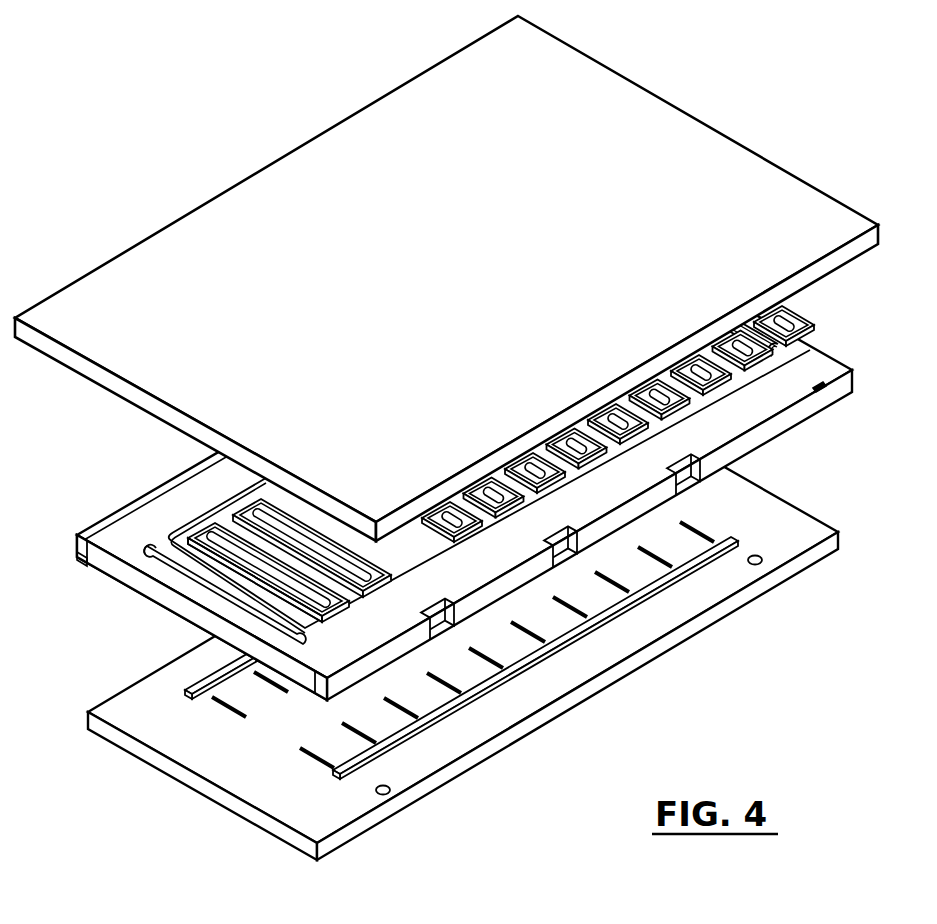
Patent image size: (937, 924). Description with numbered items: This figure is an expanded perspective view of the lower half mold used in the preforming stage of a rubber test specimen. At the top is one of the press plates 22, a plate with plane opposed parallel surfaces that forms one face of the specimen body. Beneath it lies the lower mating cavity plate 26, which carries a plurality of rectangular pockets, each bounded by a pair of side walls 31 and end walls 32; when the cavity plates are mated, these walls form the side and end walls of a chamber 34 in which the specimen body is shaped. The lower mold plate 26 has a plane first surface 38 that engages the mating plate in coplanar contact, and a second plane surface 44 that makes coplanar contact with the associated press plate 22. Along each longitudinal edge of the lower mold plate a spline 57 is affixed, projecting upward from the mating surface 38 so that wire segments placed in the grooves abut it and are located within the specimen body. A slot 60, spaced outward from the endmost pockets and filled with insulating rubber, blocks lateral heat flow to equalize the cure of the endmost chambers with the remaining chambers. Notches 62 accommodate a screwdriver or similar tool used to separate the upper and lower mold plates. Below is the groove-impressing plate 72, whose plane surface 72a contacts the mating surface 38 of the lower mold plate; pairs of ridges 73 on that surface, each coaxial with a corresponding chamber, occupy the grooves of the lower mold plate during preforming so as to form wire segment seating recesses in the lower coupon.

The press plate 22 is at (327, 142).
The lower mating cavity plate 26 is at (456, 463).
The side wall 31 is at (315, 586).
The end wall 32 is at (252, 508).
The chamber 34 is at (296, 537).
The first surface 38 is at (187, 618).
The second plane surface 44 is at (168, 577).
The spline 57 is at (80, 556).
The slot 60 is at (150, 546).
The notch 62 is at (685, 488).
The groove-impressing plate 72 is at (463, 648).
The plane surface 72a is at (250, 769).
The ridge 73 is at (240, 701).